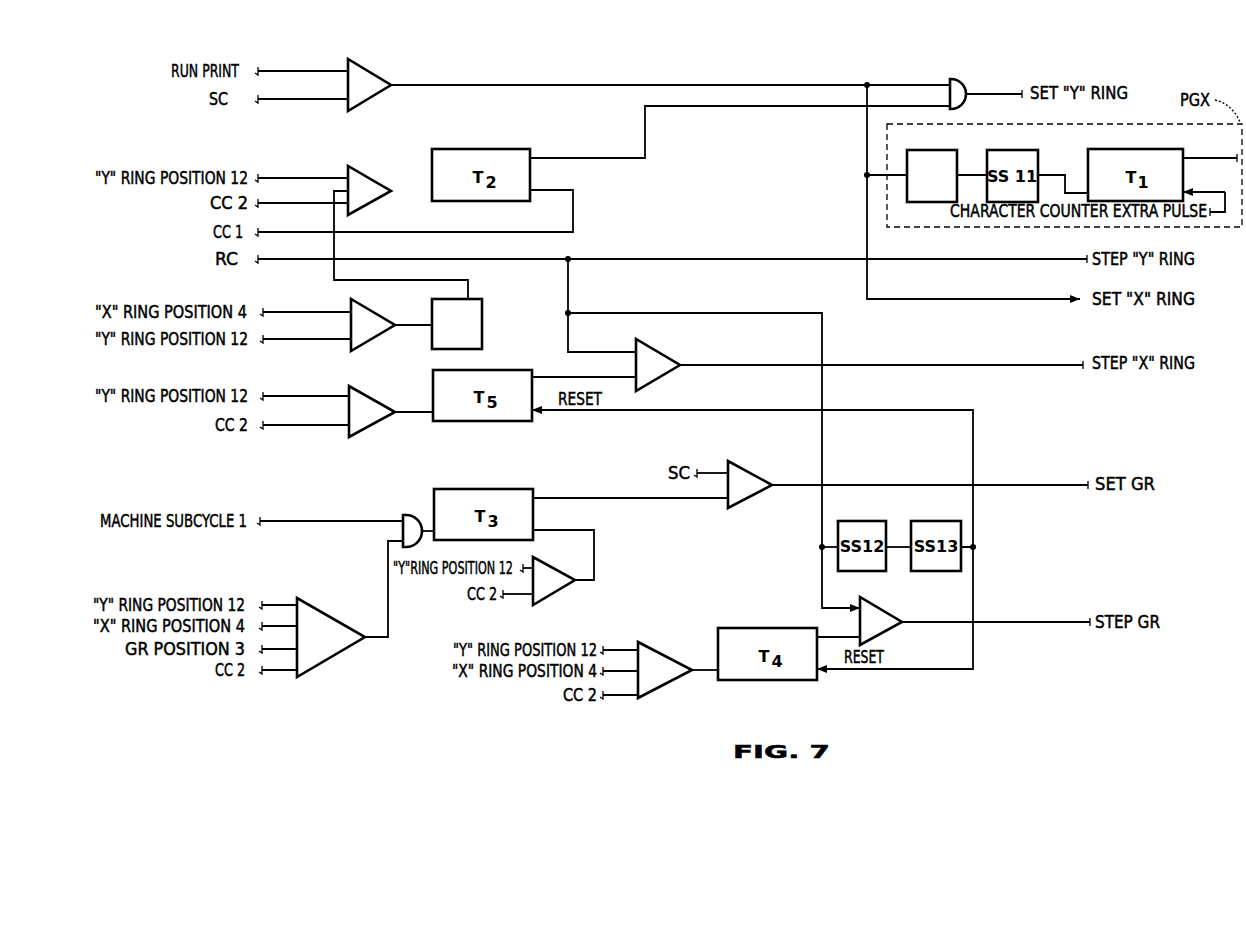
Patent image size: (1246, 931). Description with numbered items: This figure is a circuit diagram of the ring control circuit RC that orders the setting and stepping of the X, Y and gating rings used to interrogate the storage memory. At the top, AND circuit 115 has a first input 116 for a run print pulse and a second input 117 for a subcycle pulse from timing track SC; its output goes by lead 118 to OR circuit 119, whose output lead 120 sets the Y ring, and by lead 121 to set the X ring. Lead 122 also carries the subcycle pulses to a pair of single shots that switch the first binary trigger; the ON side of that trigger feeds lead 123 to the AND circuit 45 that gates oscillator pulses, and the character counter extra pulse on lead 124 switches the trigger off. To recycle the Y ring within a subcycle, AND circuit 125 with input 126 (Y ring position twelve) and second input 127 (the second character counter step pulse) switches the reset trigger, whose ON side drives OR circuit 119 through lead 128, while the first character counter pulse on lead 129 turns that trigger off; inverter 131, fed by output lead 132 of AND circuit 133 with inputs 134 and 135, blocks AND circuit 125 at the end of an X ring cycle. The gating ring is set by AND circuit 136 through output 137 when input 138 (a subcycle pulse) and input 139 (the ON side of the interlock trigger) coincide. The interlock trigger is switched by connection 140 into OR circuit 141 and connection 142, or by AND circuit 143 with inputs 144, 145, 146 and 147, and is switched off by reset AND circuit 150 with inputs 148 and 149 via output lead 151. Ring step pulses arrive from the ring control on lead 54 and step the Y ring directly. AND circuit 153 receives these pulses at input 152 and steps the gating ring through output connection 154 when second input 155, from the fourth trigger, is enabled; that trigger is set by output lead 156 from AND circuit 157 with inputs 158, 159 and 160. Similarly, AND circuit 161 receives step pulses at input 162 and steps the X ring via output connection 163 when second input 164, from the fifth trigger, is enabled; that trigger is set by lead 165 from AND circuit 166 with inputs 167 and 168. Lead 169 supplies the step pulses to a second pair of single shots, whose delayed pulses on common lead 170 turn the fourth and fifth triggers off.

The lead 54 is at (540, 259).
The AND circuit 45 is at (1214, 148).
The AND circuit 115 is at (367, 71).
The first input 116 is at (288, 70).
The second input 117 is at (315, 100).
The lead 118 is at (578, 84).
The OR circuit 119 is at (956, 80).
The output lead 120 is at (1013, 94).
The lead 121 is at (865, 138).
The lead 122 is at (902, 175).
The lead 123 is at (1188, 158).
The lead 124 is at (1232, 188).
The AND circuit 125 is at (379, 160).
The input 126 is at (300, 178).
The second input 127 is at (316, 203).
The lead 128 is at (600, 158).
The lead 129 is at (574, 212).
The inverter 131 is at (483, 322).
The output lead 132 is at (416, 324).
The AND circuit 133 is at (378, 294).
The input 134 is at (310, 312).
The input 135 is at (316, 339).
The subcycle gating ring AND circuit 136 is at (757, 477).
The output 137 is at (852, 485).
The input 138 is at (703, 473).
The input 139 is at (697, 498).
The connection 140 is at (320, 521).
The OR circuit 141 is at (405, 515).
The connection 142 is at (424, 530).
The AND circuit 143 is at (320, 612).
The input 144 is at (265, 605).
The input 145 is at (288, 626).
The input 146 is at (272, 650).
The input 147 is at (287, 670).
The input 148 is at (528, 568).
The input 149 is at (518, 594).
The reset AND circuit 150 is at (555, 591).
The output lead 151 is at (596, 555).
The input 152 is at (822, 573).
The AND circuit 153 is at (879, 609).
The output connection 154 is at (1040, 622).
The second input 155 is at (825, 637).
The output lead 156 is at (705, 670).
The AND circuit 157 is at (671, 660).
The input 158 is at (612, 650).
The input 159 is at (620, 671).
The input 160 is at (617, 695).
The AND circuit 161 is at (658, 353).
The input 162 is at (578, 352).
The output connection 163 is at (737, 365).
The second input 164 is at (555, 377).
The lead 165 is at (418, 412).
The AND circuit 166 is at (384, 386).
The input 167 is at (276, 397).
The input 168 is at (316, 425).
The lead 169 is at (823, 332).
The common lead 170 is at (975, 515).